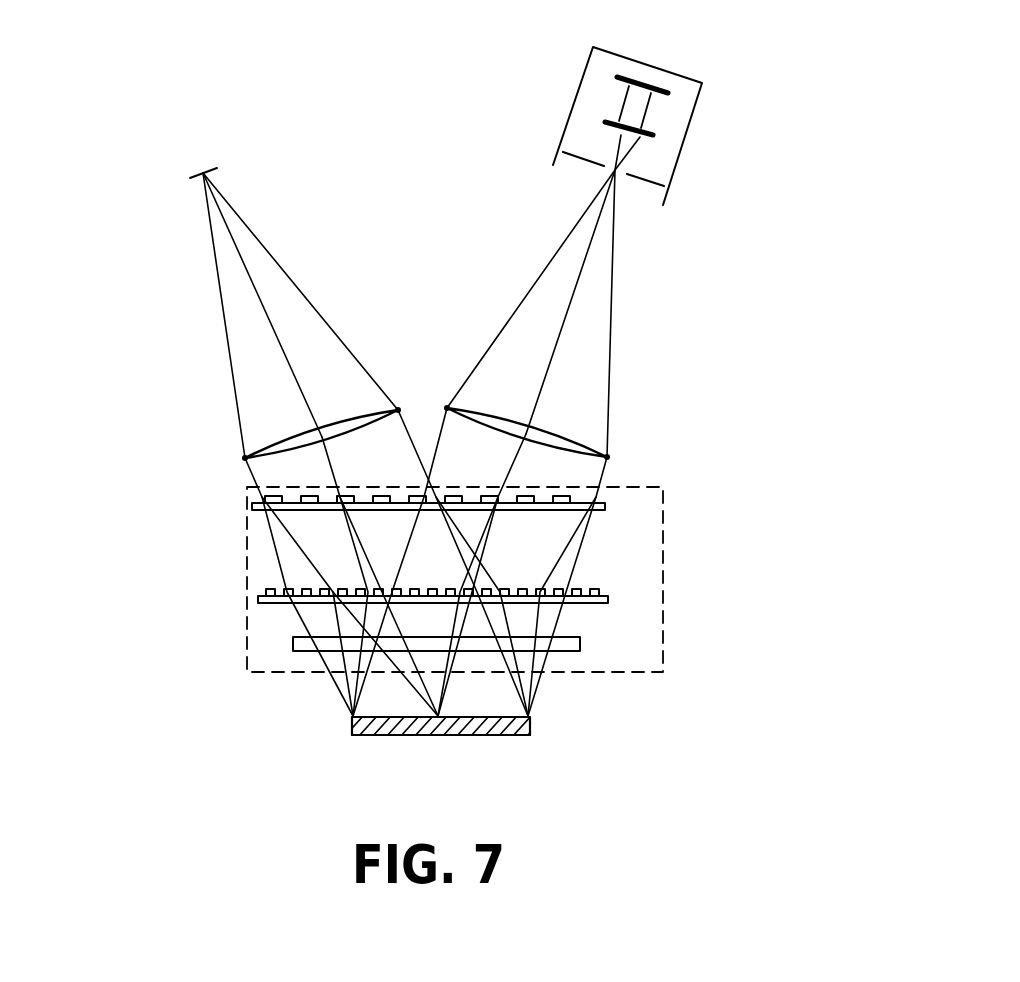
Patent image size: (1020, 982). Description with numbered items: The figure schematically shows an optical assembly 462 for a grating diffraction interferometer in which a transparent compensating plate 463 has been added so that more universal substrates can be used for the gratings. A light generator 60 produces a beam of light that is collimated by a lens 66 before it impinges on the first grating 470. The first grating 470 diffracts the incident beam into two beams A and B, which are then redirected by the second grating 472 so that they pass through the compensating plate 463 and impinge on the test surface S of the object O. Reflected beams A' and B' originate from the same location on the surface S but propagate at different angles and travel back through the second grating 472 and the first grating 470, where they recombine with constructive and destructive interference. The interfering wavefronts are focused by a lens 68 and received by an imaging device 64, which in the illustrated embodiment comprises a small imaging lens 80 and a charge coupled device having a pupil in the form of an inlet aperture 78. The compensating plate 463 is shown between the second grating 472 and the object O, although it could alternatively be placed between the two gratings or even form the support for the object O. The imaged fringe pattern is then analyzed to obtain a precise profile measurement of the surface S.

The light generator 60 is at (203, 173).
The imaging device 64 is at (643, 83).
The imaging lens 80 is at (647, 132).
The inlet aperture 78 is at (637, 175).
The lens 66 is at (270, 443).
The lens 68 is at (573, 437).
The optical assembly 462 is at (648, 479).
The first grating 470 is at (604, 505).
The second grating 472 is at (610, 598).
The compensating plate 463 is at (582, 645).
The beam A is at (229, 587).
The beam B is at (279, 606).
The reflected beam A' is at (275, 562).
The reflected beam B' is at (227, 578).
The test surface S is at (343, 707).
The object O is at (533, 725).